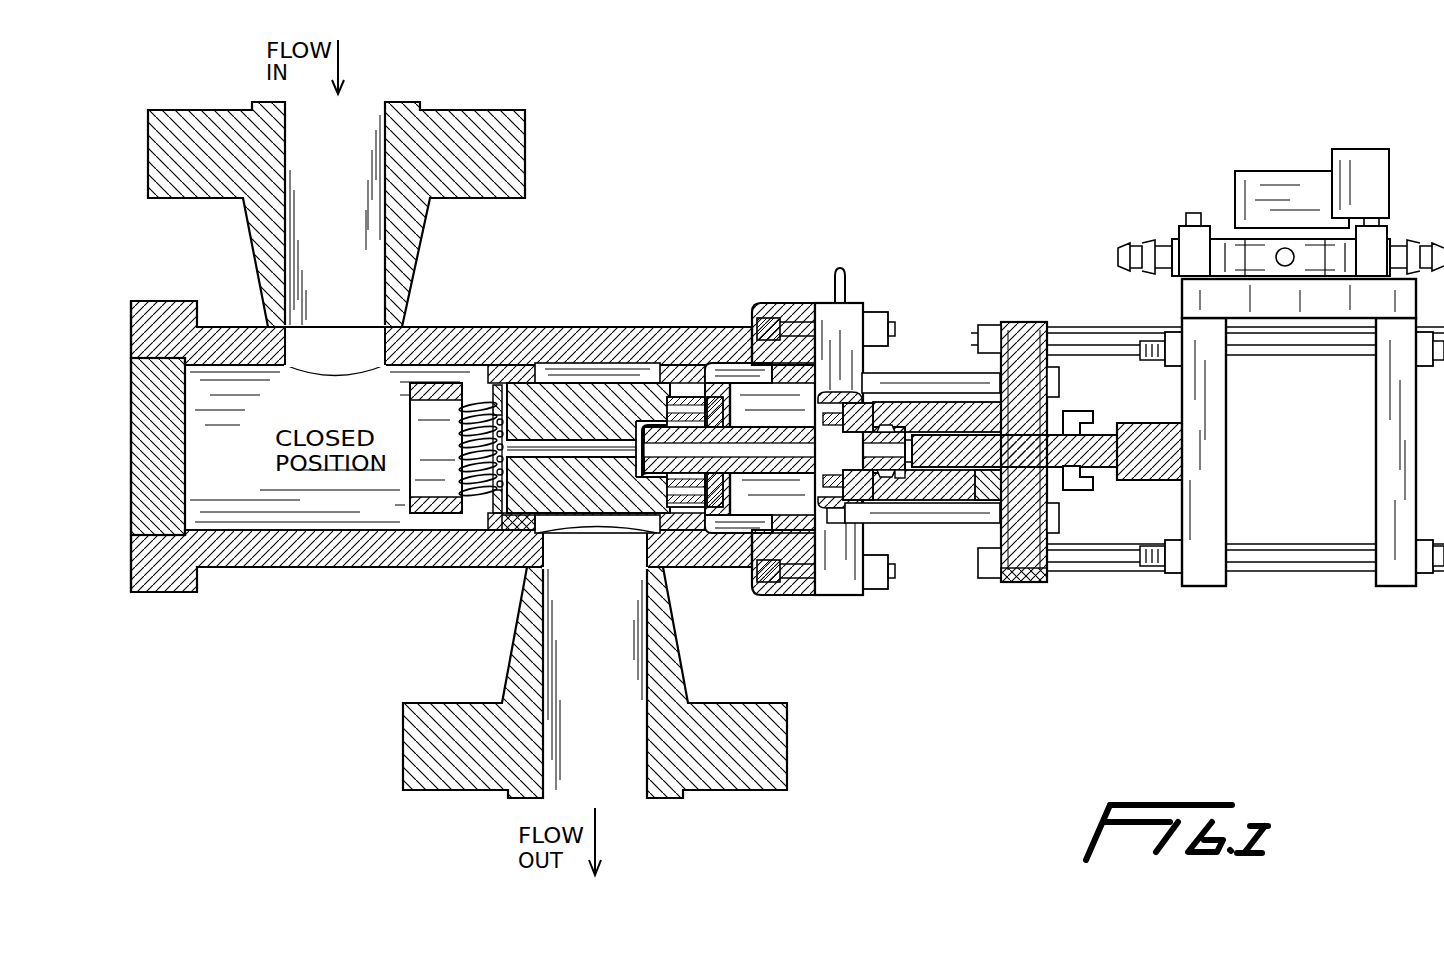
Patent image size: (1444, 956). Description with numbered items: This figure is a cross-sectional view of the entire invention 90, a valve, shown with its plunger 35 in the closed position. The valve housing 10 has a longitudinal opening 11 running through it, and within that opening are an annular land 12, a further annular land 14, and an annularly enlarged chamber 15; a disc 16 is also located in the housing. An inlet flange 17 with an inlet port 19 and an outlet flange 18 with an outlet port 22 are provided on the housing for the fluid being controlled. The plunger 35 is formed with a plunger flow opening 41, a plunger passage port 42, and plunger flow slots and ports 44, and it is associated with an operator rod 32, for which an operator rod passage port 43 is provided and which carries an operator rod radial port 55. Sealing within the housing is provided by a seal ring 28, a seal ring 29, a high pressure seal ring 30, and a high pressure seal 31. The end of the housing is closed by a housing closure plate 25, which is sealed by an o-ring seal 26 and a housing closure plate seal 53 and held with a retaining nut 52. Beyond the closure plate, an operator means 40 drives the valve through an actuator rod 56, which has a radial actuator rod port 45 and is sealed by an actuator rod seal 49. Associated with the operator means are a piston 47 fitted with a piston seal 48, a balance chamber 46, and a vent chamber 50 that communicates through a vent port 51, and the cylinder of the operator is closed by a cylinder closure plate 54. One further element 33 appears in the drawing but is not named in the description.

The valve housing 10 is at (580, 327).
The longitudinal opening 11 is at (205, 497).
The annular land 12 is at (497, 522).
The annular land 14 is at (676, 510).
The annularly enlarged chamber 15 is at (615, 325).
The disc 16 is at (135, 515).
The inlet flange 17 is at (508, 132).
The outlet flange 18 is at (777, 763).
The inlet port 19 is at (362, 112).
The outlet port 22 is at (628, 790).
The housing closure plate 25 is at (828, 598).
The o-ring seal 26 is at (850, 598).
The seal ring 28 is at (453, 505).
The seal ring 29 is at (714, 570).
The high pressure seal ring 30 is at (825, 365).
The high pressure seal 31 is at (545, 368).
The operator rod 32 is at (790, 372).
The actuator mounting plate 33 is at (977, 410).
The plunger 35 is at (407, 507).
The operator means 40 is at (1305, 520).
The plunger flow opening 41 is at (418, 423).
The plunger passage port 42 is at (623, 445).
The operator rod passage port 43 is at (740, 430).
The plunger flow slots and ports 44 is at (485, 405).
The radial actuator rod port 45 is at (990, 500).
The balance chamber 46 is at (992, 432).
The piston 47 is at (905, 500).
The piston seal 48 is at (918, 500).
The actuator rod seal 49 is at (1062, 466).
The vent chamber 50 is at (850, 417).
The vent port 51 is at (875, 487).
The retaining nut 52 is at (887, 423).
The housing closure plate seal 53 is at (878, 500).
The cylinder closure plate 54 is at (1040, 583).
The operator rod radial port 55 is at (752, 575).
The actuator rod 56 is at (1062, 437).
The entire invention 90 is at (625, 278).